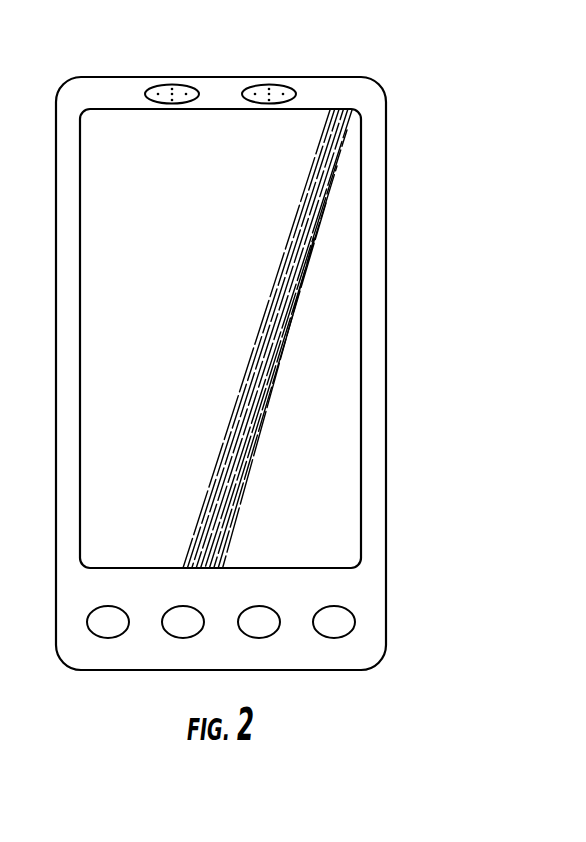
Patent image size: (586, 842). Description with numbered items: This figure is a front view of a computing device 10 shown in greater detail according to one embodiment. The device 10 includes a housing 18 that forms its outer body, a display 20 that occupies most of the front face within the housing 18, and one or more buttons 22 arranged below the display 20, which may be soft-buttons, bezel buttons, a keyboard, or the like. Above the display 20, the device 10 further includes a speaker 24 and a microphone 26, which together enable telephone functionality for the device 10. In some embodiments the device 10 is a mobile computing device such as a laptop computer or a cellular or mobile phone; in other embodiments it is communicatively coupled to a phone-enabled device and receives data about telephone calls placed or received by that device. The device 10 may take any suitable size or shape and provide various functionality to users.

The device 10 is at (436, 61).
The housing 18 is at (375, 156).
The display 20 is at (323, 282).
The buttons 22 is at (408, 589).
The speaker 24 is at (178, 85).
The microphone 26 is at (279, 85).